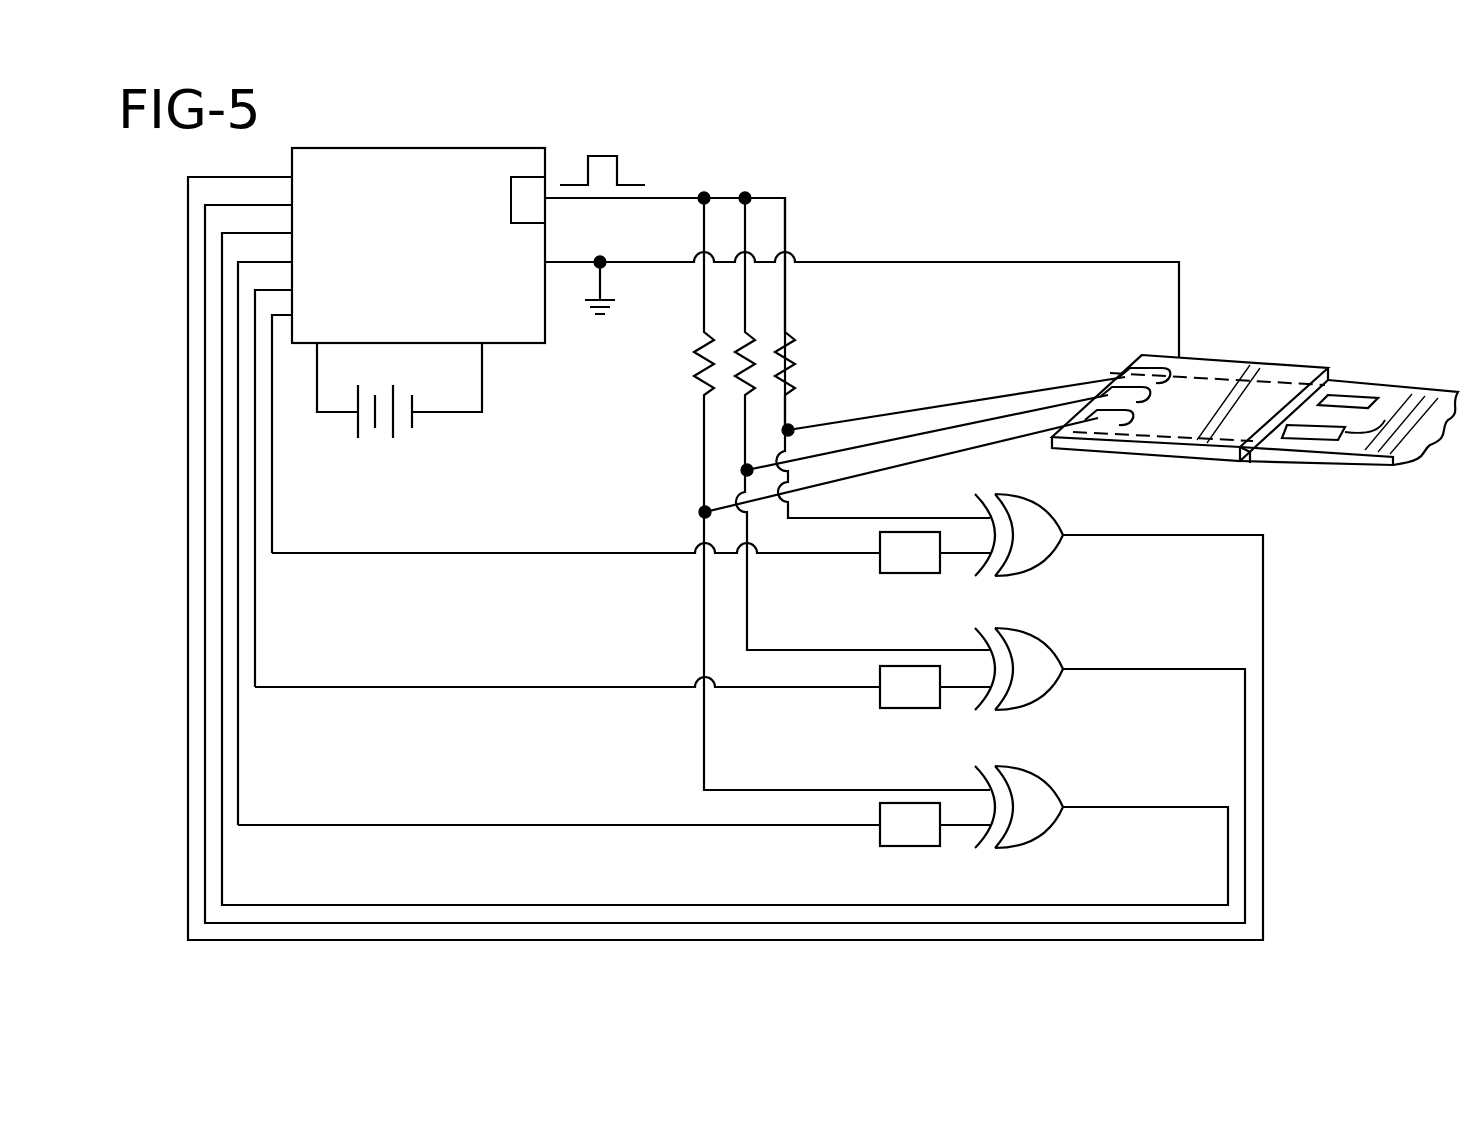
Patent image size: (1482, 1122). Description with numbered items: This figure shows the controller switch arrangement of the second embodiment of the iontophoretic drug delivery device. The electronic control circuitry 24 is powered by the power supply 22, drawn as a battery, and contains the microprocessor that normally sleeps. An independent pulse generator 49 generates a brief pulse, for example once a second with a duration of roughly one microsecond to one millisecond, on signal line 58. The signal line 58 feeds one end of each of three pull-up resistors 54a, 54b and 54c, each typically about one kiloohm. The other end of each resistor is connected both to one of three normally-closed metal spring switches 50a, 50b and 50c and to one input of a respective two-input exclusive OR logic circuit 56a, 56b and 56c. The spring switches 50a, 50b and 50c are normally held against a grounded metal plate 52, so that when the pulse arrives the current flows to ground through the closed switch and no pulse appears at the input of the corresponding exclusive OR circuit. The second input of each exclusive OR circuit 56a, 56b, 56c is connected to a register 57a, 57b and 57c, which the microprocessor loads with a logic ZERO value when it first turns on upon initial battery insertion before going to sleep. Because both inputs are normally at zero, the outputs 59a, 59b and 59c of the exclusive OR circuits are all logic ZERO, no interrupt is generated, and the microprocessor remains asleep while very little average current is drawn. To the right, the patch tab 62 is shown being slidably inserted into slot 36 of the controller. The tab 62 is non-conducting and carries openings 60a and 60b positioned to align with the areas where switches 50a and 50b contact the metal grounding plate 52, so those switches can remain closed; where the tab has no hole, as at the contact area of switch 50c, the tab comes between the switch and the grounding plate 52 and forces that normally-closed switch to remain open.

The power supply 22 is at (393, 440).
The electronic control circuitry 24 is at (418, 148).
The slot 36 is at (1250, 458).
The pulse generator 49 is at (525, 196).
The metal spring switch 50a is at (1146, 370).
The metal spring switch 50b is at (1107, 395).
The metal spring switch 50c is at (1132, 450).
The grounded metal plate 52 is at (1245, 360).
The pull-up resistor 54a is at (788, 362).
The pull-up resistor 54b is at (747, 395).
The pull-up resistor 54c is at (705, 348).
The two-input exclusive OR logic circuit 56a is at (1060, 524).
The two-input exclusive OR logic circuit 56b is at (1060, 658).
The two-input exclusive OR logic circuit 56c is at (1060, 796).
The register 57a is at (880, 566).
The register 57b is at (880, 700).
The register 57c is at (880, 838).
The signal line 58 is at (617, 168).
The exclusive OR circuit output 59a is at (1102, 537).
The exclusive OR circuit output 59b is at (1102, 671).
The exclusive OR circuit output 59c is at (1102, 809).
The opening 60a is at (1340, 398).
The opening 60b is at (1375, 404).
The patch tab 62 is at (1408, 448).